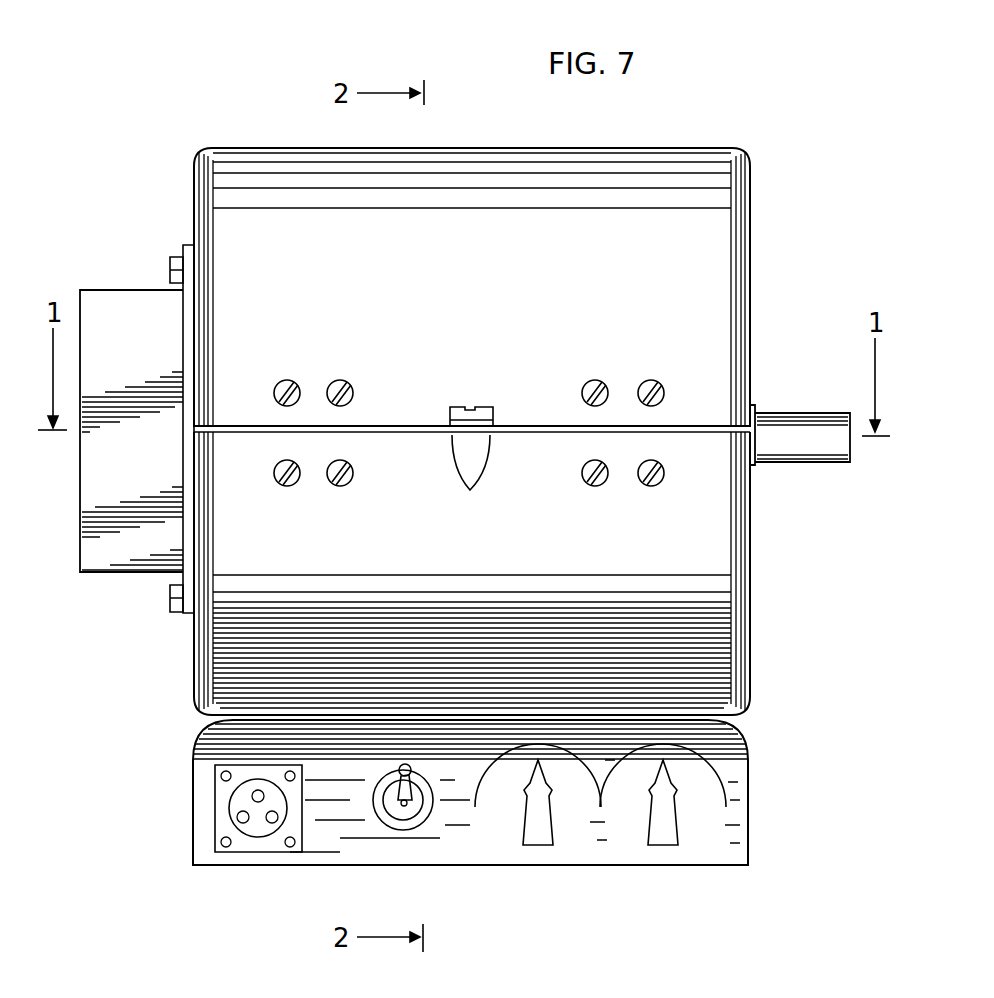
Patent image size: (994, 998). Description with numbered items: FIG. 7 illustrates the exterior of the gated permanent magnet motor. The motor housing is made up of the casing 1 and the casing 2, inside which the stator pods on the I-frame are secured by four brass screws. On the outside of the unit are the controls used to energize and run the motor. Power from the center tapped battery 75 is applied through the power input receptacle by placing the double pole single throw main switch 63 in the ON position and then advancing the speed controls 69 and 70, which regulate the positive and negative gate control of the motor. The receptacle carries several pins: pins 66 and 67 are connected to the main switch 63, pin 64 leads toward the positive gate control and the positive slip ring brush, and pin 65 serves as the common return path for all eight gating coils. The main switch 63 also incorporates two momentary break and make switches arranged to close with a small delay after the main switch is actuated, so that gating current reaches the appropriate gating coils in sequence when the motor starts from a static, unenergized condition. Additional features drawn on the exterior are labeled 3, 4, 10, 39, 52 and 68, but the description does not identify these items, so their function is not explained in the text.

The casing 1 is at (668, 150).
The casing 2 is at (748, 542).
The base 3 is at (748, 800).
The mounting bracket 4 is at (113, 574).
The shaft 10 is at (783, 413).
The screws 39 is at (326, 396).
The bolts 52 is at (170, 272).
The main switch 63 is at (400, 815).
The pin 64 is at (410, 830).
The input receptacle pin 65 is at (252, 796).
The pin 66 is at (237, 817).
The pin 67 is at (269, 822).
The pointer 68 is at (460, 407).
The speed control 69 is at (540, 845).
The speed control 70 is at (665, 845).
The center tapped battery 75 is at (215, 803).